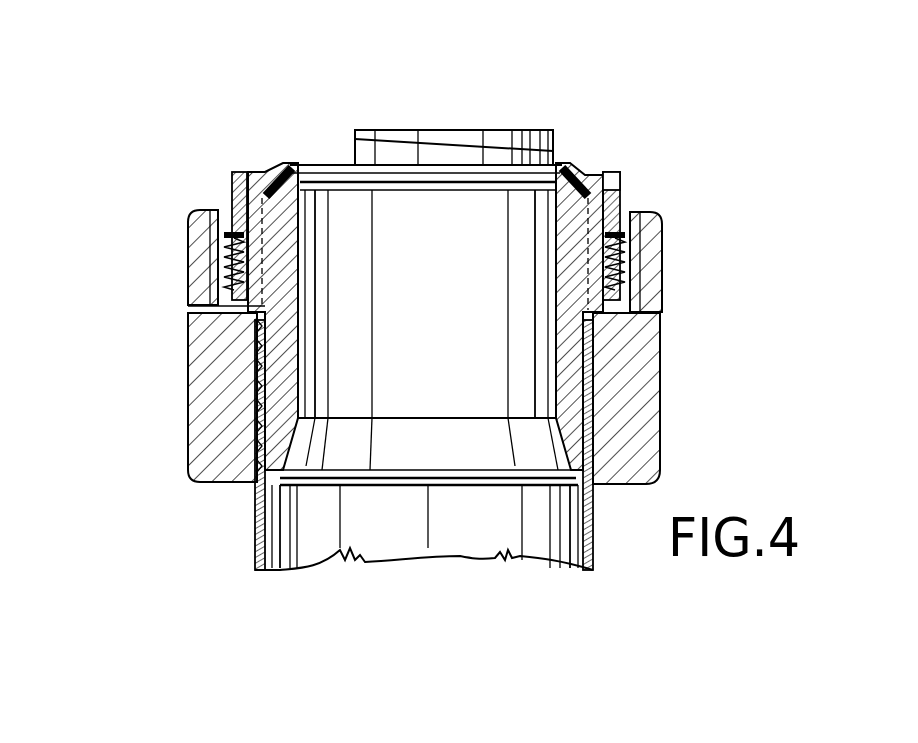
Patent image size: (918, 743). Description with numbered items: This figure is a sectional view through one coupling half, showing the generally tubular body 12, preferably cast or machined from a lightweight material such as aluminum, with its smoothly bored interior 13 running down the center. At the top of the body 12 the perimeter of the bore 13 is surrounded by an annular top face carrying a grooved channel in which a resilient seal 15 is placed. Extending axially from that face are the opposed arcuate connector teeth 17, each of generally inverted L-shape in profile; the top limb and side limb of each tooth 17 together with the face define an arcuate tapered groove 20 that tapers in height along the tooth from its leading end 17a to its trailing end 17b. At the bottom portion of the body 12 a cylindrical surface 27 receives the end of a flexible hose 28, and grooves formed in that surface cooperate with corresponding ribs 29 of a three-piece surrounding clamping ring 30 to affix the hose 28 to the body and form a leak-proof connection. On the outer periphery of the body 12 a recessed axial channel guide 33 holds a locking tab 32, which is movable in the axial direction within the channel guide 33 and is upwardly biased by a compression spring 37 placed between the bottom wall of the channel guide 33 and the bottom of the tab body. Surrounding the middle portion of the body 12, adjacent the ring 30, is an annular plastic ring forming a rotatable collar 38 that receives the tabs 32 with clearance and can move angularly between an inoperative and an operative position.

The tubular body 12 is at (593, 496).
The bored interior 13 is at (486, 395).
The resilient seal 15 is at (282, 150).
The connector tooth 17 is at (496, 110).
The leading end 17a is at (351, 128).
The trailing end 17b is at (553, 142).
The arcuate tapered groove 20 is at (428, 152).
The cylindrical surface 27 is at (232, 482).
The flexible hose 28 is at (287, 550).
The ribs 29 is at (258, 355).
The clamping ring 30 is at (216, 423).
The locking tab 32 is at (233, 192).
The channel guide 33 is at (640, 258).
The compression spring 37 is at (228, 270).
The rotatable collar 38 is at (652, 287).